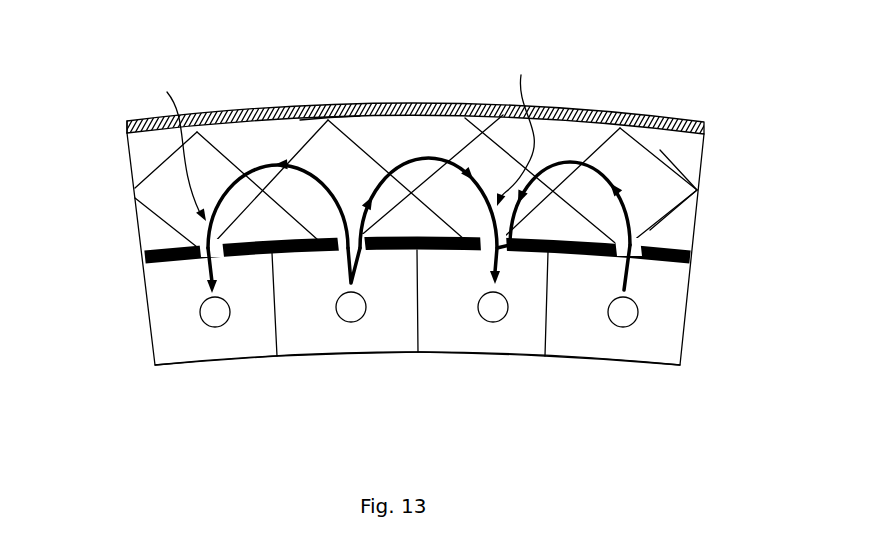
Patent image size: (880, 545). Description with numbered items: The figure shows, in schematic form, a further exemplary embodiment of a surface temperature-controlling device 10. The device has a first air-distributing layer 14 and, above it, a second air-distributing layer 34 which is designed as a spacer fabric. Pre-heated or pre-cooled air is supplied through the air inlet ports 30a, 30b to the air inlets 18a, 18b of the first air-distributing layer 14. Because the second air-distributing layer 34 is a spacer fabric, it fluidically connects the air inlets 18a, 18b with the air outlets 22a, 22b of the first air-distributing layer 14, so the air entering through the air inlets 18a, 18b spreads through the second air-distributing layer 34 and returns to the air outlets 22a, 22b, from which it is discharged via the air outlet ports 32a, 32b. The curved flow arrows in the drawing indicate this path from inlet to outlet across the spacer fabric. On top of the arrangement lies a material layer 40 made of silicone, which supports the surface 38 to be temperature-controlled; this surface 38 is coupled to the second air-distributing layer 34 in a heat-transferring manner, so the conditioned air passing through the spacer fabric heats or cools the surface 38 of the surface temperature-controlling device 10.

The surface temperature-controlling device 10 is at (673, 103).
The first air-distributing layer 14 is at (675, 263).
The air inlet 18a is at (313, 108).
The air inlet 18b is at (690, 188).
The air outlet 22a is at (169, 146).
The air outlet 22b is at (529, 130).
The air inlet port 30a is at (332, 347).
The air inlet port 30b is at (640, 352).
The air outlet port 32a is at (185, 350).
The air outlet port 32b is at (512, 347).
The second air-distributing layer 34 is at (680, 221).
The surface to be temperature-controlled 38 is at (404, 102).
The material layer 40 is at (128, 133).